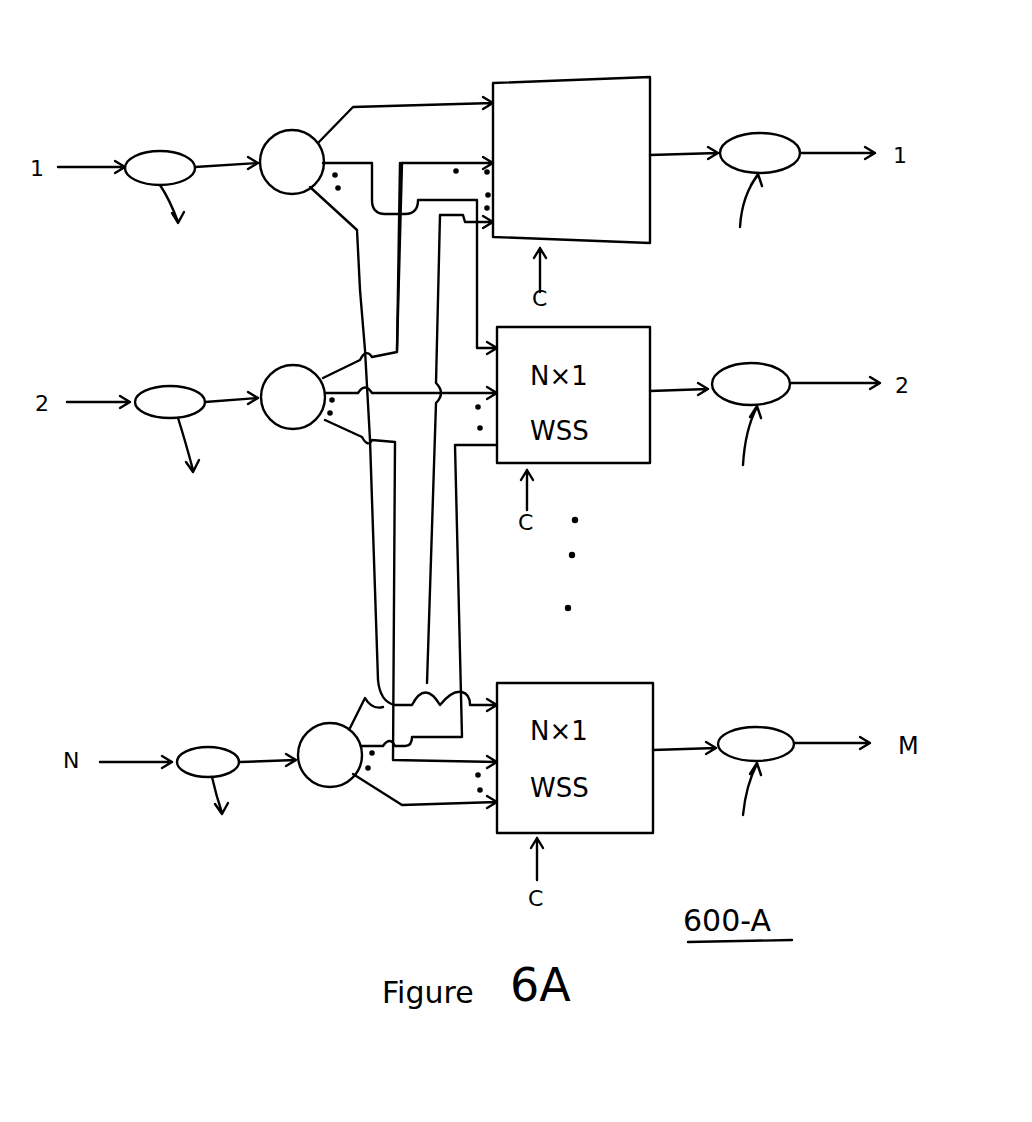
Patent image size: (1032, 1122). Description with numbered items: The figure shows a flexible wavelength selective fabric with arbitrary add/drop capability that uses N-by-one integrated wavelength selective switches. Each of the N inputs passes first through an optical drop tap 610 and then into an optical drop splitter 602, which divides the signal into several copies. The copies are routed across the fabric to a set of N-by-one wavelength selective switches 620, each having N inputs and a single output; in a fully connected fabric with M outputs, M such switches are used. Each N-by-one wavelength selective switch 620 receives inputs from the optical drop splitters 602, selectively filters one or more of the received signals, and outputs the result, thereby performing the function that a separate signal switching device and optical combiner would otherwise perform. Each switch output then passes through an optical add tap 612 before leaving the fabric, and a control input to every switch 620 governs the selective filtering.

The optical drop tap 610 is at (162, 148).
The optical drop splitter 602 is at (294, 130).
The N×1 wavelength selective switch 620 is at (570, 78).
The optical add tap 612 is at (768, 131).